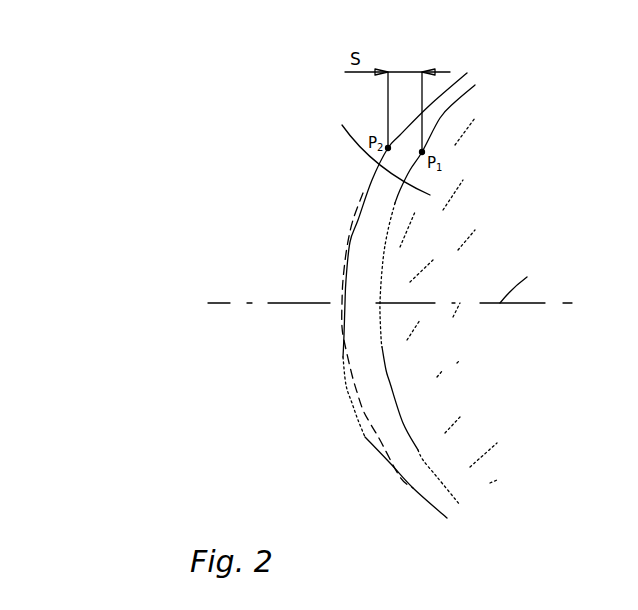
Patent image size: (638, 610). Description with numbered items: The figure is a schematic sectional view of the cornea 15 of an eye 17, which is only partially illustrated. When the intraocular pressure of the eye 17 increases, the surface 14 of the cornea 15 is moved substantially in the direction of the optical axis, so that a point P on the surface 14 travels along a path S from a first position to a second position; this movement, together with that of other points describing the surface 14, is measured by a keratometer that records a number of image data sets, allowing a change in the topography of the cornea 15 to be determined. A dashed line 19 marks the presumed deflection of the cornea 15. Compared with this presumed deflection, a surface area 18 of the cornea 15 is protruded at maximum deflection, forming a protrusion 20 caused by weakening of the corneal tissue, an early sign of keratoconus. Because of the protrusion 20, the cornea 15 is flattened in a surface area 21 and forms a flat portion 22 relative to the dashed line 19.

The surface 14 is at (419, 453).
The cornea 15 is at (376, 147).
The eye 17 is at (176, 175).
The surface area 18 is at (325, 441).
The dashed line 19 is at (355, 227).
The protrusion 20 is at (364, 438).
The surface area 21 is at (326, 263).
The flat portion 22 is at (348, 239).